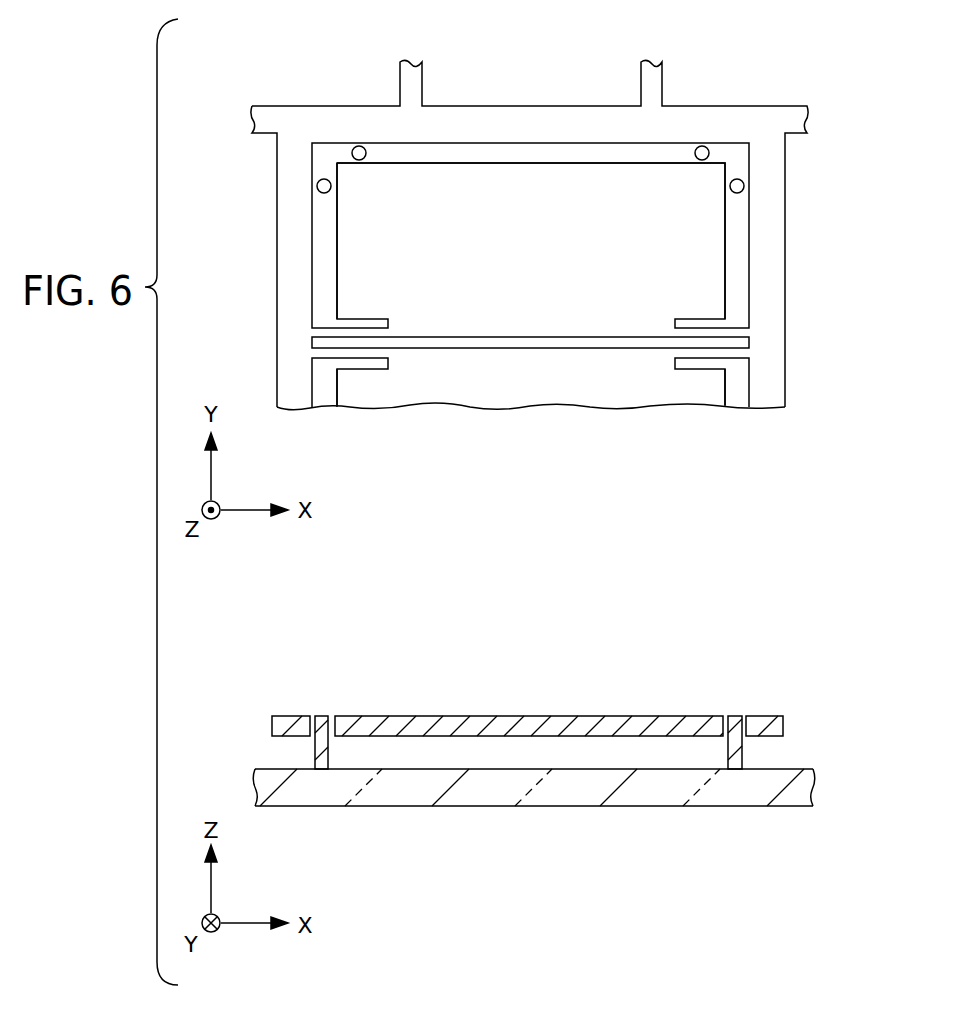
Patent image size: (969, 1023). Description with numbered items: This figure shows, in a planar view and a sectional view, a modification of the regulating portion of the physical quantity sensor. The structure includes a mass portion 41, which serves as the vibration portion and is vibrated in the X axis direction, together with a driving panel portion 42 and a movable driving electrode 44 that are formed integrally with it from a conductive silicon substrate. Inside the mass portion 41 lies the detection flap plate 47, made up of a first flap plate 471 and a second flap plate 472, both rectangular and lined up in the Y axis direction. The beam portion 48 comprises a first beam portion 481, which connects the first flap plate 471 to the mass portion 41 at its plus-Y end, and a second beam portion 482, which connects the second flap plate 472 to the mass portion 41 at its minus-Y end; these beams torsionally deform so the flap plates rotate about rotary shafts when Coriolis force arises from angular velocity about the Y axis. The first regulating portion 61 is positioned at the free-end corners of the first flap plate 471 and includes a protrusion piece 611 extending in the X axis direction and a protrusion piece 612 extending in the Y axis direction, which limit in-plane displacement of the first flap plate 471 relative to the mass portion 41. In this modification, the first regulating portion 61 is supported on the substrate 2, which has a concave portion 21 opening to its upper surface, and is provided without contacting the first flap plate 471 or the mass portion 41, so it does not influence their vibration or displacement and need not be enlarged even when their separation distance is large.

The substrate 2 is at (584, 790).
The concave portion 21 is at (508, 768).
The mass portion 41 is at (770, 250).
The driving panel portion 42 is at (271, 120).
The movable driving electrode 44 is at (406, 75).
The detection flap plate 47 is at (530, 397).
The first flap plate 471 is at (538, 185).
The second flap plate 472 is at (522, 383).
The beam portion 48 is at (529, 356).
The first beam portion 481 is at (728, 336).
The second beam portion 482 is at (333, 353).
The first regulating portion 61 is at (530, 394).
The protrusion piece 611 is at (317, 186).
The protrusion piece 612 is at (360, 146).